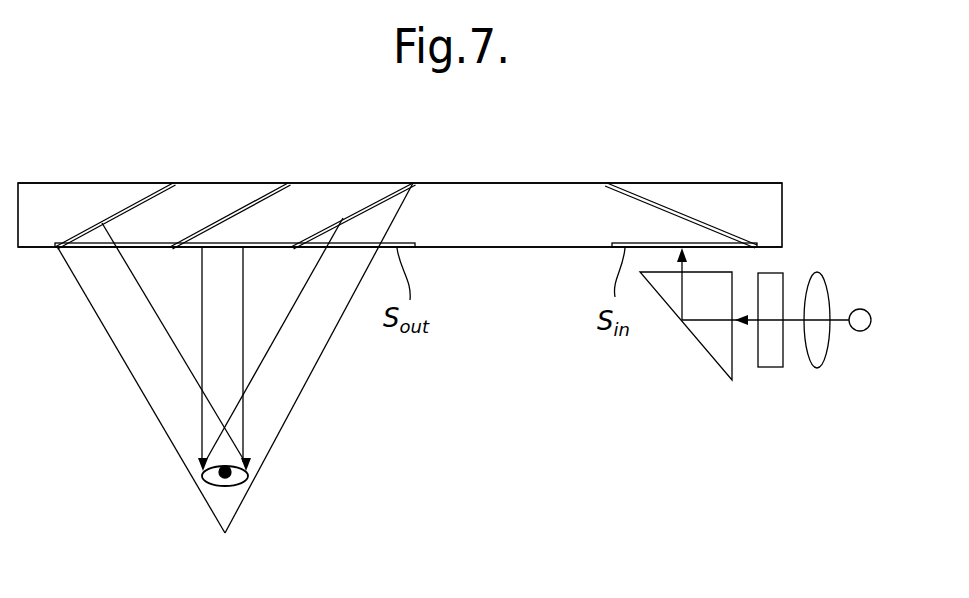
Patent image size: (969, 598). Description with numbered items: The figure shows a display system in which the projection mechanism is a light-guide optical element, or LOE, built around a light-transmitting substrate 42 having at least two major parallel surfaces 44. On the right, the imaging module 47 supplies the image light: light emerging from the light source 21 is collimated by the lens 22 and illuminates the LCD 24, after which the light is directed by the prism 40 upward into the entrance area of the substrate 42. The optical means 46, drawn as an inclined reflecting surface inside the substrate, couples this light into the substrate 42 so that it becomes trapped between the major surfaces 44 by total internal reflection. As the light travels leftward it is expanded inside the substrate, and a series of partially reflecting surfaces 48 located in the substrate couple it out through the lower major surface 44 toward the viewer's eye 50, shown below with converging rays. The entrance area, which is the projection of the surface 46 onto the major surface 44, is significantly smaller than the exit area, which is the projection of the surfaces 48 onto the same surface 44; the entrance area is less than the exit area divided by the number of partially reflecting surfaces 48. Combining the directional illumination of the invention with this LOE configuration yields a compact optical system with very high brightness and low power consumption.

The light source 21 is at (858, 308).
The lens 22 is at (820, 343).
The LCD 24 is at (773, 370).
The prism 40 is at (705, 337).
The light-transmitting substrate 42 is at (441, 194).
The major parallel surfaces 44 is at (512, 183).
The optical means for coupling 46 is at (680, 205).
The imaging module 47 is at (810, 385).
The partially reflecting surface 48 is at (115, 212).
The viewer's eye 50 is at (210, 506).